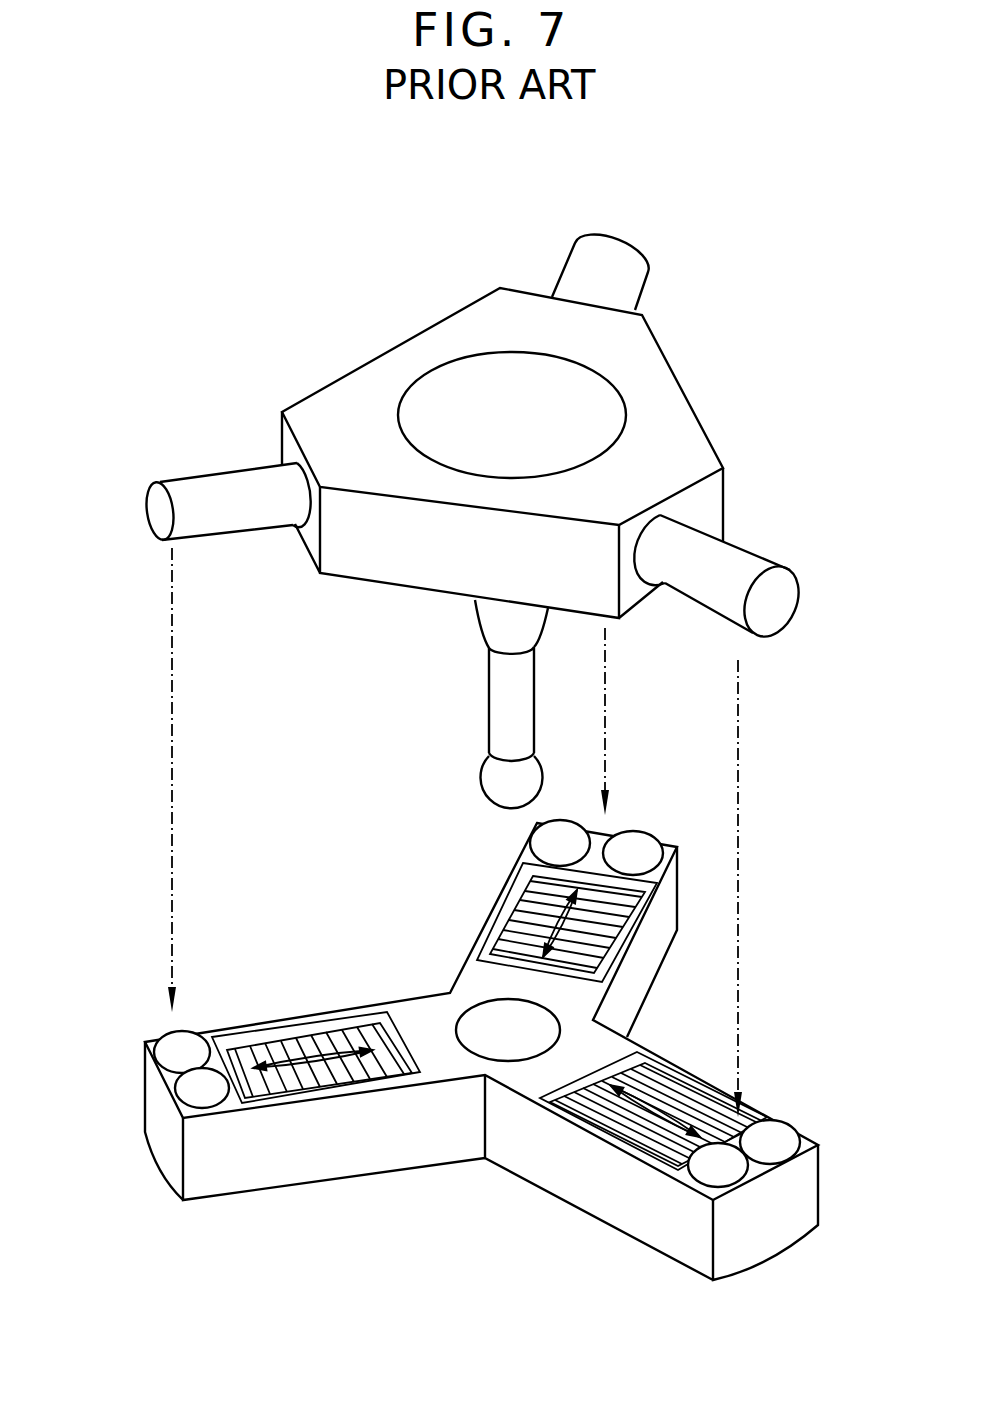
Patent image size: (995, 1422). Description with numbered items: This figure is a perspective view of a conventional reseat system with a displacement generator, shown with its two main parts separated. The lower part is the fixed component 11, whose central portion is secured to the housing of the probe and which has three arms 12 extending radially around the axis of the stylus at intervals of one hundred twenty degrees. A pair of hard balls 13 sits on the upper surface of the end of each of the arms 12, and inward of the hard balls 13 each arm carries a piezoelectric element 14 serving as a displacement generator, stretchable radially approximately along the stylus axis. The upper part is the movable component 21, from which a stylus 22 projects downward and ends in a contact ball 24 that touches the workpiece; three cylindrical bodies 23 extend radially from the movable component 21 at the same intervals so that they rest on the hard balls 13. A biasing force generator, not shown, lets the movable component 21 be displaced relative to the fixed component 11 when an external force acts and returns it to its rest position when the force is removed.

The fixed component 11 is at (528, 1082).
The arms 12 is at (648, 965).
The hard balls 13 is at (635, 847).
The piezoelectric element 14 is at (522, 918).
The movable component 21 is at (673, 408).
The stylus 22 is at (505, 692).
The cylindrical bodies 23 is at (583, 268).
The contact ball 24 is at (498, 782).